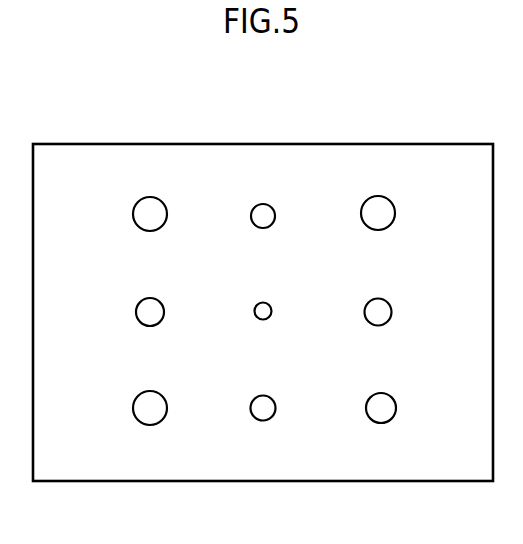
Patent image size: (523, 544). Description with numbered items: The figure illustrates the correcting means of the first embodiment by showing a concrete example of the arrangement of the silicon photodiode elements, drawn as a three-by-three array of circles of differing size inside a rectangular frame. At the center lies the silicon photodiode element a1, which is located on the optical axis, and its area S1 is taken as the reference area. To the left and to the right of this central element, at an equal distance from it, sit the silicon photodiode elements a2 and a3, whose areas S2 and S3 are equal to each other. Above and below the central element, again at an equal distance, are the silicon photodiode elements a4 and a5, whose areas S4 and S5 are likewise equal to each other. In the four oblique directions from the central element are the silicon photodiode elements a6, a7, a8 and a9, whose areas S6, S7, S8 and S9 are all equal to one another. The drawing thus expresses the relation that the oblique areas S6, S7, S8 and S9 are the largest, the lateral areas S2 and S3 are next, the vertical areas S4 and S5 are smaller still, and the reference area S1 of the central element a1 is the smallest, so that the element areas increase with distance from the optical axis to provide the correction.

The area of silicon photodiode element a1 S1 is at (274, 314).
The area of silicon photodiode element a2 S2 is at (160, 314).
The area of silicon photodiode element a3 S3 is at (387, 314).
The area of silicon photodiode element a4 S4 is at (274, 211).
The area of silicon photodiode element a5 S5 is at (279, 408).
The area of silicon photodiode element a6 S6 is at (152, 212).
The area of silicon photodiode element a7 S7 is at (384, 211).
The area of silicon photodiode element a8 S8 is at (164, 408).
The area of silicon photodiode element a9 S9 is at (392, 408).
The silicon photodiode element a1 is at (269, 317).
The silicon photodiode element a2 is at (160, 322).
The silicon photodiode element a3 is at (388, 322).
The silicon photodiode element a4 is at (272, 225).
The silicon photodiode element a5 is at (272, 417).
The silicon photodiode element a6 is at (162, 226).
The silicon photodiode element a7 is at (390, 225).
The silicon photodiode element a8 is at (162, 420).
The silicon photodiode element a9 is at (392, 419).